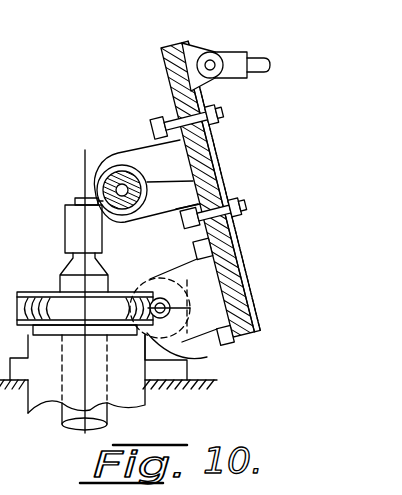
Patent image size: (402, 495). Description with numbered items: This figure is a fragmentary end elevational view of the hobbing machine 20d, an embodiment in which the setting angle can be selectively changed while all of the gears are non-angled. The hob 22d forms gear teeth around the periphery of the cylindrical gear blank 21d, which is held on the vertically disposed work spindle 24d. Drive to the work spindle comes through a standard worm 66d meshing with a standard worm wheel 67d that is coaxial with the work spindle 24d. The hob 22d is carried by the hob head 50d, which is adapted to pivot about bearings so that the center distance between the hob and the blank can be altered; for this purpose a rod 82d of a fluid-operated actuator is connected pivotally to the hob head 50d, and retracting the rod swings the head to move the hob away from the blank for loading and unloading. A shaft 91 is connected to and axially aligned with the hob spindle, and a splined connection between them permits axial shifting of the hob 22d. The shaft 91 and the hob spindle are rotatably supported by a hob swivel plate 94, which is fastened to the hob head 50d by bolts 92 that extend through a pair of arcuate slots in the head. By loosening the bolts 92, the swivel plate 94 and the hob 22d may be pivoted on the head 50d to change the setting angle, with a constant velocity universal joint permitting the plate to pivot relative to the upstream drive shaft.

The hobbing machine 20d is at (101, 261).
The gear blank 21d is at (66, 210).
The hob 22d is at (99, 176).
The work spindle 24d is at (68, 262).
The hob head 50d is at (224, 150).
The worm 66d is at (198, 356).
The worm wheel 67d is at (50, 294).
The rod 82d is at (258, 56).
The shaft 91 is at (180, 210).
The bolts 92 is at (164, 116).
The hob swivel plate 94 is at (160, 146).